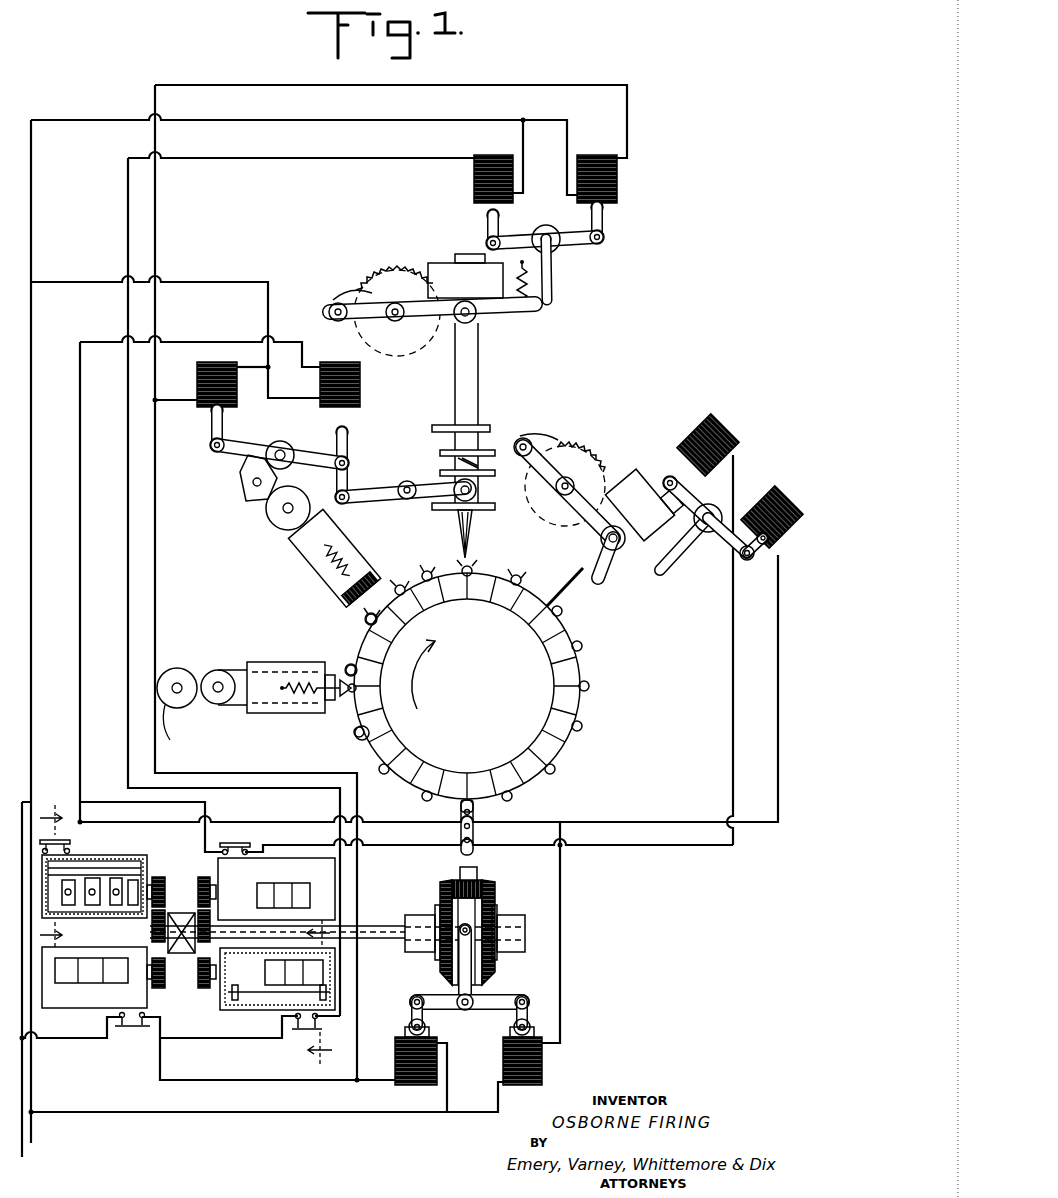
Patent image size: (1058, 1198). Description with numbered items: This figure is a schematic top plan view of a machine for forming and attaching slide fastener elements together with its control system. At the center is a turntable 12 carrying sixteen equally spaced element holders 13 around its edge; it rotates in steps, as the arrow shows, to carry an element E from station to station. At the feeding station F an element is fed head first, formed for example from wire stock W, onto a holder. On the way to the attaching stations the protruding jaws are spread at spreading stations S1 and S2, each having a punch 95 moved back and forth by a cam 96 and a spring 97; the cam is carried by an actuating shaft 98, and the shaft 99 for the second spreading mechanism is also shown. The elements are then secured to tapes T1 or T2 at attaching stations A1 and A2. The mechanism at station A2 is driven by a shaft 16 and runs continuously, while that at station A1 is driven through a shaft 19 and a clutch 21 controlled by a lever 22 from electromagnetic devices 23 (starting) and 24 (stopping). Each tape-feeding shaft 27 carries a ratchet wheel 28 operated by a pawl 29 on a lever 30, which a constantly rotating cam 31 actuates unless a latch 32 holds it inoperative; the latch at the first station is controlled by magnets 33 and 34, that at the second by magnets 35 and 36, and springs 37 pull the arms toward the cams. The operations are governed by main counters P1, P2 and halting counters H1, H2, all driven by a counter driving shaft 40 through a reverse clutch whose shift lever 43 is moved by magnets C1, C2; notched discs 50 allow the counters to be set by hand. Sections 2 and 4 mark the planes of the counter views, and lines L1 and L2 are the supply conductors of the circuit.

The turntable 12 is at (594, 666).
The element holders 13 is at (577, 727).
The shaft 16 is at (600, 566).
The shaft 19 is at (478, 370).
The clutch 21 is at (435, 465).
The lever 22 is at (372, 492).
The electro-magnetic clutch-shifting device 23 is at (197, 380).
The electro-magnetic clutch-shifting device 24 is at (362, 392).
The tape-feeding shaft 27 is at (395, 303).
The ratchet wheel 28 is at (405, 275).
The pawl 29 is at (335, 297).
The lever 30 is at (420, 320).
The cam 31 is at (490, 305).
The latch 32 is at (553, 296).
The electro-magnetic device 33 is at (620, 187).
The electro-magnetic device 34 is at (474, 184).
The electro-magnetic device 35 is at (770, 545).
The electro-magnetic device 36 is at (712, 430).
The spring 37 is at (530, 285).
The counter driving shaft 40 is at (383, 925).
The shift lever 43 is at (470, 1010).
The notched discs 50 is at (82, 875).
The punch 95 is at (335, 706).
The cam 96 is at (226, 706).
The spring 97 is at (300, 692).
The actuating shaft 98 is at (178, 710).
The shaft 99 is at (247, 492).
The attaching station A1 is at (478, 870).
The attaching station A2 is at (497, 922).
The electro-magnetic device C1 is at (400, 1085).
The electro-magnetic device C2 is at (545, 1070).
The element E is at (355, 735).
The element-feeding or forming station F is at (492, 811).
The halting counter H1 is at (222, 996).
The halting counter H2 is at (256, 884).
The main counter P1 is at (100, 948).
The main counter P2 is at (130, 858).
The spreading station S1 is at (346, 661).
The spreading station S2 is at (355, 615).
The tape T1 is at (455, 541).
The tape T2 is at (553, 592).
The wire stock W is at (475, 826).
The line conductor L1 is at (44, 631).
The line conductor L2 is at (26, 992).
The section line 2 is at (58, 877).
The section line 4 is at (310, 993).